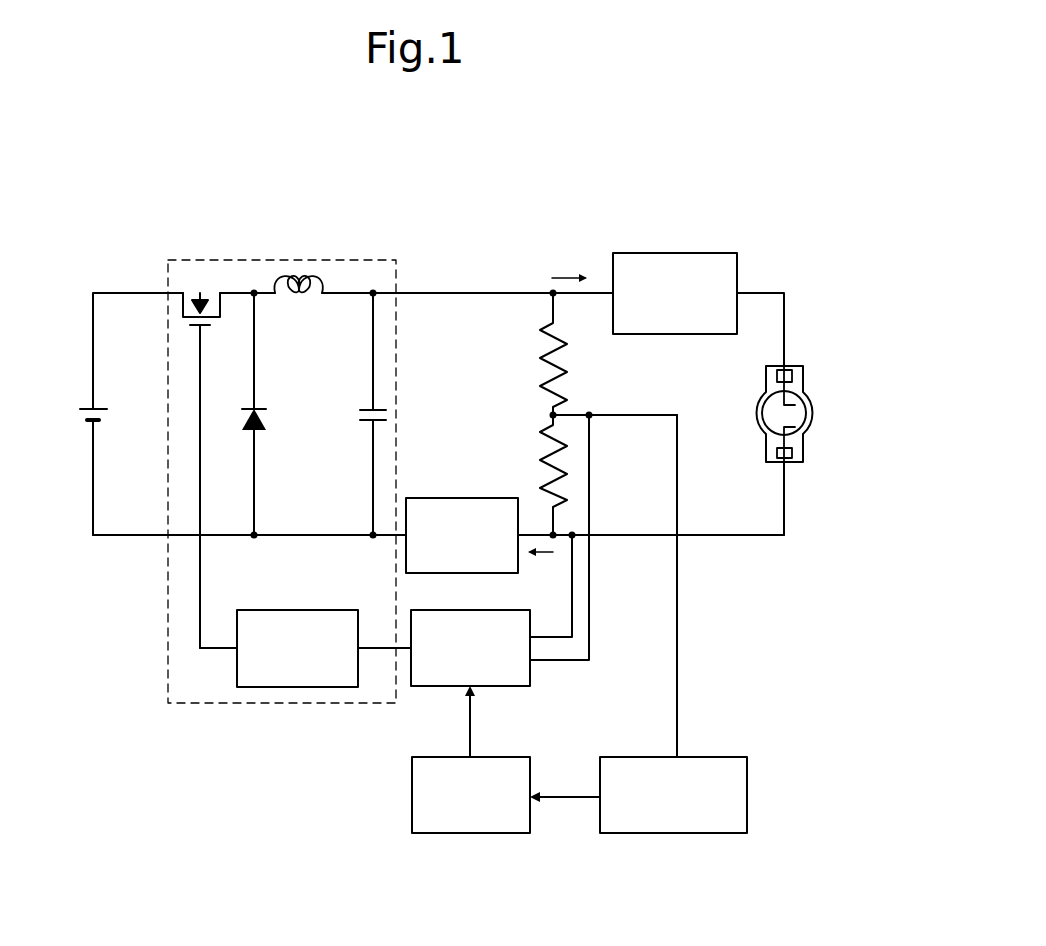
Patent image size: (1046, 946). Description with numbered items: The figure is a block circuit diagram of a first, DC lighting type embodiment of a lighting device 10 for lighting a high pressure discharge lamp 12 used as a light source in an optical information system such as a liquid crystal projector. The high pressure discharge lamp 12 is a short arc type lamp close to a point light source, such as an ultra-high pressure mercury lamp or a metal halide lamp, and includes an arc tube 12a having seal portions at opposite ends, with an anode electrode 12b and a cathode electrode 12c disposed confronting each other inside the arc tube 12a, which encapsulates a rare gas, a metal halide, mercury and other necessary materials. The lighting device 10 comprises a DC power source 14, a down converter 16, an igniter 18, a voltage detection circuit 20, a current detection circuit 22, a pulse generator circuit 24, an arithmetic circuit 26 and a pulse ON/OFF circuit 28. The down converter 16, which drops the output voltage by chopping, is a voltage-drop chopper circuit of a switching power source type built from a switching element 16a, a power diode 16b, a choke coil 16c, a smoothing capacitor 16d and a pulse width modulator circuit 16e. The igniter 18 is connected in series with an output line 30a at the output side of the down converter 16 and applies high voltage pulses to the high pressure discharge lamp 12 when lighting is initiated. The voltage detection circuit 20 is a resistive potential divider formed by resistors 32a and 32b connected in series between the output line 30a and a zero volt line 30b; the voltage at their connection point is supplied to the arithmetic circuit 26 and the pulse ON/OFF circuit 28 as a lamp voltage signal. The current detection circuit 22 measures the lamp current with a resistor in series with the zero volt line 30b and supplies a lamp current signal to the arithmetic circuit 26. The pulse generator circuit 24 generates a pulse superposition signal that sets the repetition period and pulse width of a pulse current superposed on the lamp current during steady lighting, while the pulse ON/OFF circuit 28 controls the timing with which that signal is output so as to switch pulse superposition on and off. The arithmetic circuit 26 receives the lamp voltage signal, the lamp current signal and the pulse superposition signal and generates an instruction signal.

The lighting device 10 is at (121, 223).
The high pressure discharge lamp 12 is at (814, 395).
The arc tube 12a is at (812, 418).
The anode electrode 12b is at (805, 398).
The cathode electrode 12c is at (800, 432).
The DC power source 14 is at (88, 407).
The down converter 16 is at (373, 258).
The switching element 16a is at (211, 276).
The power diode 16b is at (263, 418).
The choke coil 16c is at (298, 278).
The smoothing capacitor 16d is at (370, 406).
The pulse width modulator circuit 16e is at (272, 608).
The igniter 18 is at (685, 253).
The voltage detection circuit 20 is at (569, 414).
The current detection circuit 22 is at (438, 498).
The pulse generator circuit 24 is at (458, 835).
The arithmetic circuit 26 is at (510, 686).
The pulse ON/OFF circuit 28 is at (660, 835).
The output line 30a is at (447, 292).
The 0V line 30b is at (307, 533).
The resistor 32a is at (568, 350).
The resistor 32b is at (543, 468).